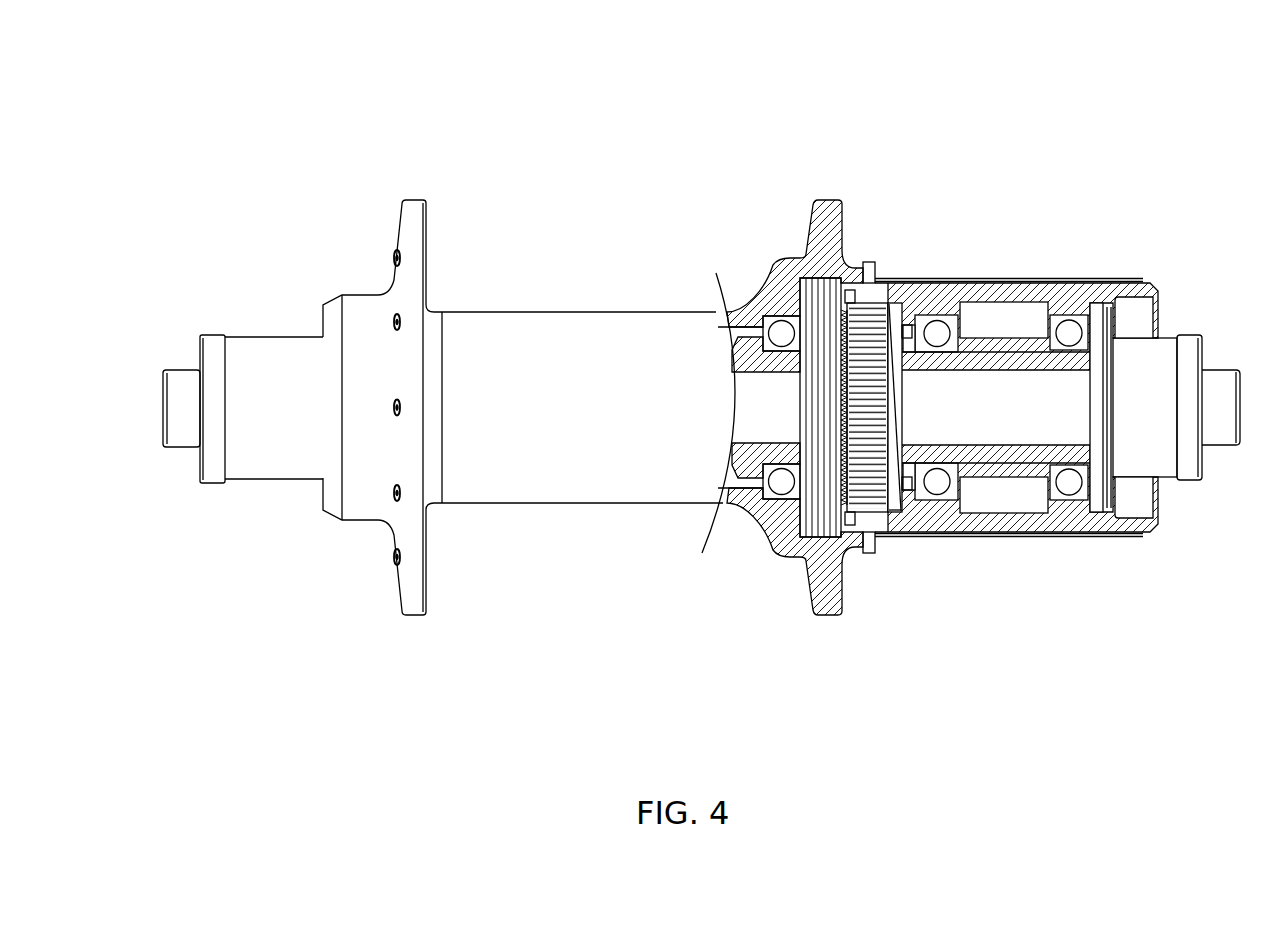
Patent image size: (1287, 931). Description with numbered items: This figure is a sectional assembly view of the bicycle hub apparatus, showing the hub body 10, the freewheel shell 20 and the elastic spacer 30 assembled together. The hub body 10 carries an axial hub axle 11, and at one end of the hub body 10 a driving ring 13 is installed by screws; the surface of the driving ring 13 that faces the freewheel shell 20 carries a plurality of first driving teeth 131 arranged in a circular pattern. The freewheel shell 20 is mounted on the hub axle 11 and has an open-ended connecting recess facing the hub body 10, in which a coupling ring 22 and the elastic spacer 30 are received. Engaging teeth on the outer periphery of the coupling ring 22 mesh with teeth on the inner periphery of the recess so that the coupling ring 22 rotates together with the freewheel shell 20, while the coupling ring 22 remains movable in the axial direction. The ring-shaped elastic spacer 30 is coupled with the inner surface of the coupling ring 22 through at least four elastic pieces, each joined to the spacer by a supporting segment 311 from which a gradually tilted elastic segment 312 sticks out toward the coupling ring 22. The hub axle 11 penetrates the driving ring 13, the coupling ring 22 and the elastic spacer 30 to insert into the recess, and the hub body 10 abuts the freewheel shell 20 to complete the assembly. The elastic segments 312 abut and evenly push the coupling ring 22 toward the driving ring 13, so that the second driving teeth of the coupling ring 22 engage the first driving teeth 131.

The hub body 10 is at (683, 214).
The hub axle 11 is at (972, 350).
The driving ring 13 is at (813, 290).
The first driving teeth 131 is at (843, 492).
The freewheel shell 20 is at (1045, 260).
The coupling ring 22 is at (872, 262).
The elastic spacer 30 is at (908, 422).
The supporting segment 311 is at (910, 482).
The elastic segment 312 is at (900, 512).